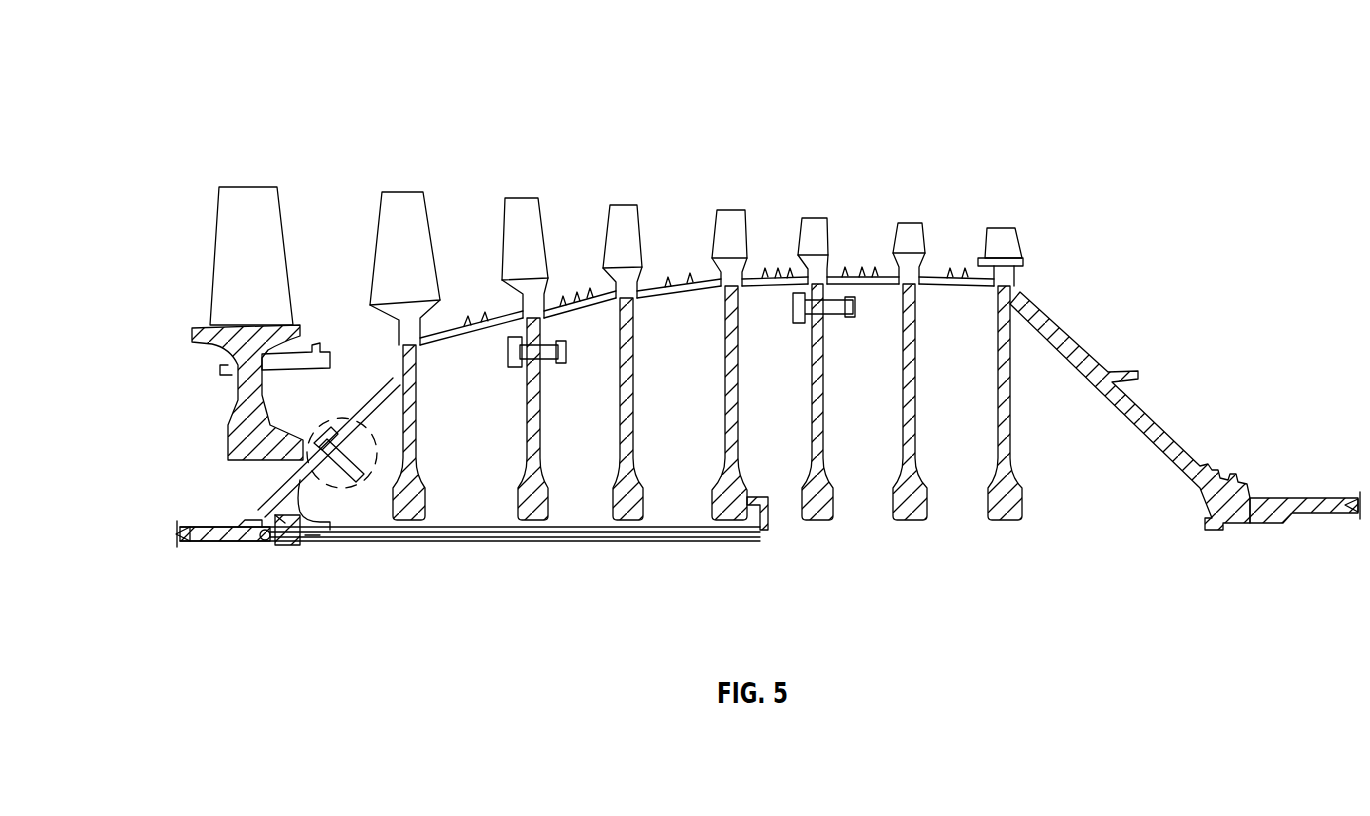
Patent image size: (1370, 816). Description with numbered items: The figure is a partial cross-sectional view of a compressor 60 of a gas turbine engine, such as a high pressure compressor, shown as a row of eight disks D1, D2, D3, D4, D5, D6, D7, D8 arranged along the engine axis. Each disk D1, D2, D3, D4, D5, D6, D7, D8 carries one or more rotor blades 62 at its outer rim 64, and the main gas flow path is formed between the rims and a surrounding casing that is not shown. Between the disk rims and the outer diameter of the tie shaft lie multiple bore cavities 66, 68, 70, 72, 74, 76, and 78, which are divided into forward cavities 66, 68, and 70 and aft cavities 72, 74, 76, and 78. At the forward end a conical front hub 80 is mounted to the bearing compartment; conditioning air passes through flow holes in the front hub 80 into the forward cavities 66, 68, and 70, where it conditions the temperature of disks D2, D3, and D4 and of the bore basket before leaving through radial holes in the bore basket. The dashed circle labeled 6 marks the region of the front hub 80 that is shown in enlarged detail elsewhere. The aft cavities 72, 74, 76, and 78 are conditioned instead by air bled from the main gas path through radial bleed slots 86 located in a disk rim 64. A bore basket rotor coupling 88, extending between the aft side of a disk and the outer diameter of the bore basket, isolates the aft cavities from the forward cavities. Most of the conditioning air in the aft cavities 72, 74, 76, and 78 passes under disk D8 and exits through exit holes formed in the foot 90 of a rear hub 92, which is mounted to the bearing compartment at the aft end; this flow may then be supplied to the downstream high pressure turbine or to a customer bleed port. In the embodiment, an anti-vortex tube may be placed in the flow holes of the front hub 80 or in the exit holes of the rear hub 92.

The compressor 60 is at (196, 115).
The rotor blades 62 is at (250, 197).
The rim 64 is at (292, 313).
The bore cavity 66 is at (486, 435).
The bore cavity 68 is at (591, 428).
The bore cavity 70 is at (693, 403).
The bore cavity 72 is at (781, 395).
The bore cavity 74 is at (876, 375).
The bore cavity 76 is at (974, 368).
The bore cavity 78 is at (1063, 418).
The front hub 80 is at (374, 380).
The radial bleed slots 86 is at (752, 278).
The bore basket rotor coupling 88 is at (768, 528).
The foot 90 is at (1308, 503).
The rear hub 92 is at (1140, 413).
The section detail 6 is at (332, 416).
The disk D1 is at (240, 452).
The disk D2 is at (408, 508).
The disk D3 is at (535, 510).
The disk D4 is at (628, 510).
The disk D5 is at (735, 510).
The disk D6 is at (815, 510).
The disk D7 is at (912, 510).
The disk D8 is at (1010, 510).